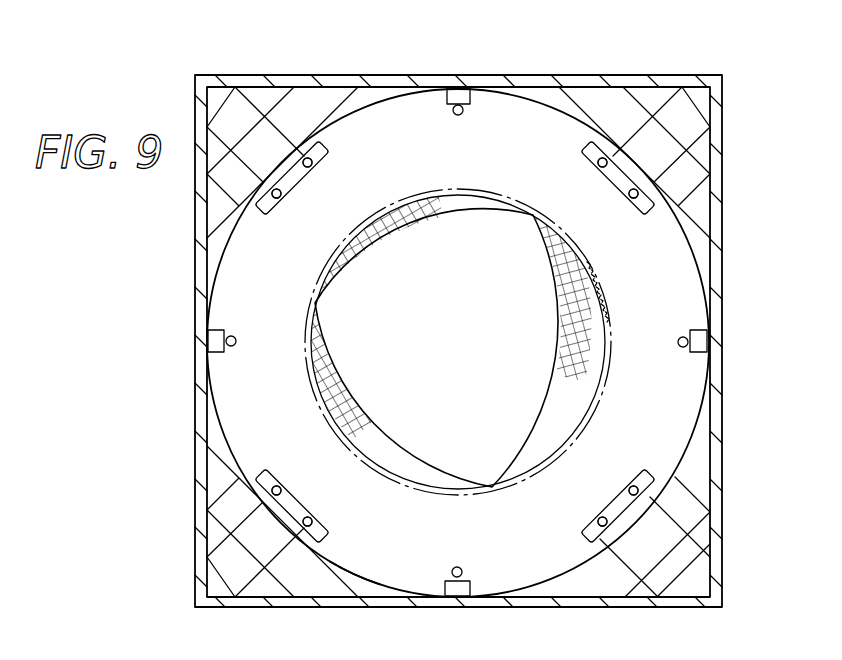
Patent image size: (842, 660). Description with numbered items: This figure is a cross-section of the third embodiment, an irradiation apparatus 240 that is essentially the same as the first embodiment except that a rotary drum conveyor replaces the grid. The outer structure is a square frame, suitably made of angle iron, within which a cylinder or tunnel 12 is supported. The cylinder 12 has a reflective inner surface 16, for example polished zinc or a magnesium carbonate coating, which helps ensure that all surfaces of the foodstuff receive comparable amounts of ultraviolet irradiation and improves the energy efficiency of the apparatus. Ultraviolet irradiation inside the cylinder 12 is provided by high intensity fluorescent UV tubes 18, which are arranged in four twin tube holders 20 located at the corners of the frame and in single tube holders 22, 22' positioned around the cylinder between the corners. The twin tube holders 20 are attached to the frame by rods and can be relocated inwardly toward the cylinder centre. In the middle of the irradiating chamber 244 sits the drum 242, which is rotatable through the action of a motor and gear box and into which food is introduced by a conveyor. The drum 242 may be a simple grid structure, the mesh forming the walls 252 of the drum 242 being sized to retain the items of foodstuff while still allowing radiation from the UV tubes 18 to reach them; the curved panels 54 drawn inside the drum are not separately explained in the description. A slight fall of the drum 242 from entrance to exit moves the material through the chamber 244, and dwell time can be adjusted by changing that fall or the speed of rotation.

The cylinder or tunnel 12 is at (690, 258).
The reflective inner surface 16 is at (353, 571).
The high intensity fluorescent UV tubes 18 is at (277, 199).
The twin tube holders 20 is at (305, 177).
The single tube holders 22 is at (456, 442).
The single tube holder 22' is at (484, 66).
The panel 54 is at (443, 217).
The apparatus 240 is at (180, 562).
The drum 242 is at (600, 290).
The chamber 244 is at (723, 410).
The walls of drum 252 is at (340, 353).